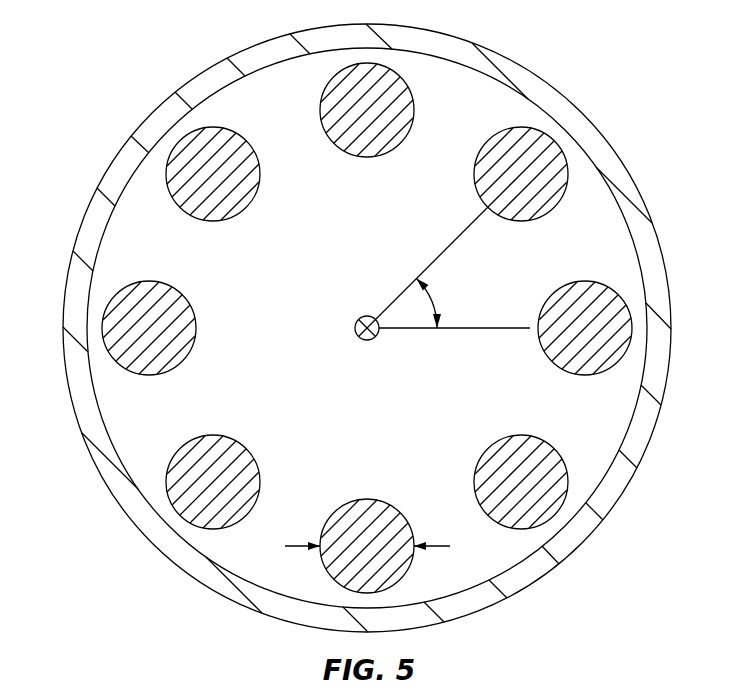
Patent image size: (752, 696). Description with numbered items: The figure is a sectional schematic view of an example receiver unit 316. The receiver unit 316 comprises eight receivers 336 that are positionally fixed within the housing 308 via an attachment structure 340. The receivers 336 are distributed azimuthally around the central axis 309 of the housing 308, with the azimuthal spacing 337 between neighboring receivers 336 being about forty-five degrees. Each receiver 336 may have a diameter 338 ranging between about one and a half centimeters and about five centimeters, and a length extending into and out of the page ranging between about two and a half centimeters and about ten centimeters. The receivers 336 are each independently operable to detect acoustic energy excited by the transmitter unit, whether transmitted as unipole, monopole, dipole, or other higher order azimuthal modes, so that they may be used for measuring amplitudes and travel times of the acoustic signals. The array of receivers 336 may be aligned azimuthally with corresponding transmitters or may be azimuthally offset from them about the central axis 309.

The receiver unit 316 is at (601, 78).
The housing 308 is at (625, 488).
The attachment structure 340 is at (319, 270).
The receivers 336 is at (262, 172).
The central axis 309 is at (367, 341).
The azimuthal spacing 337 is at (433, 297).
The diameter 338 is at (298, 545).